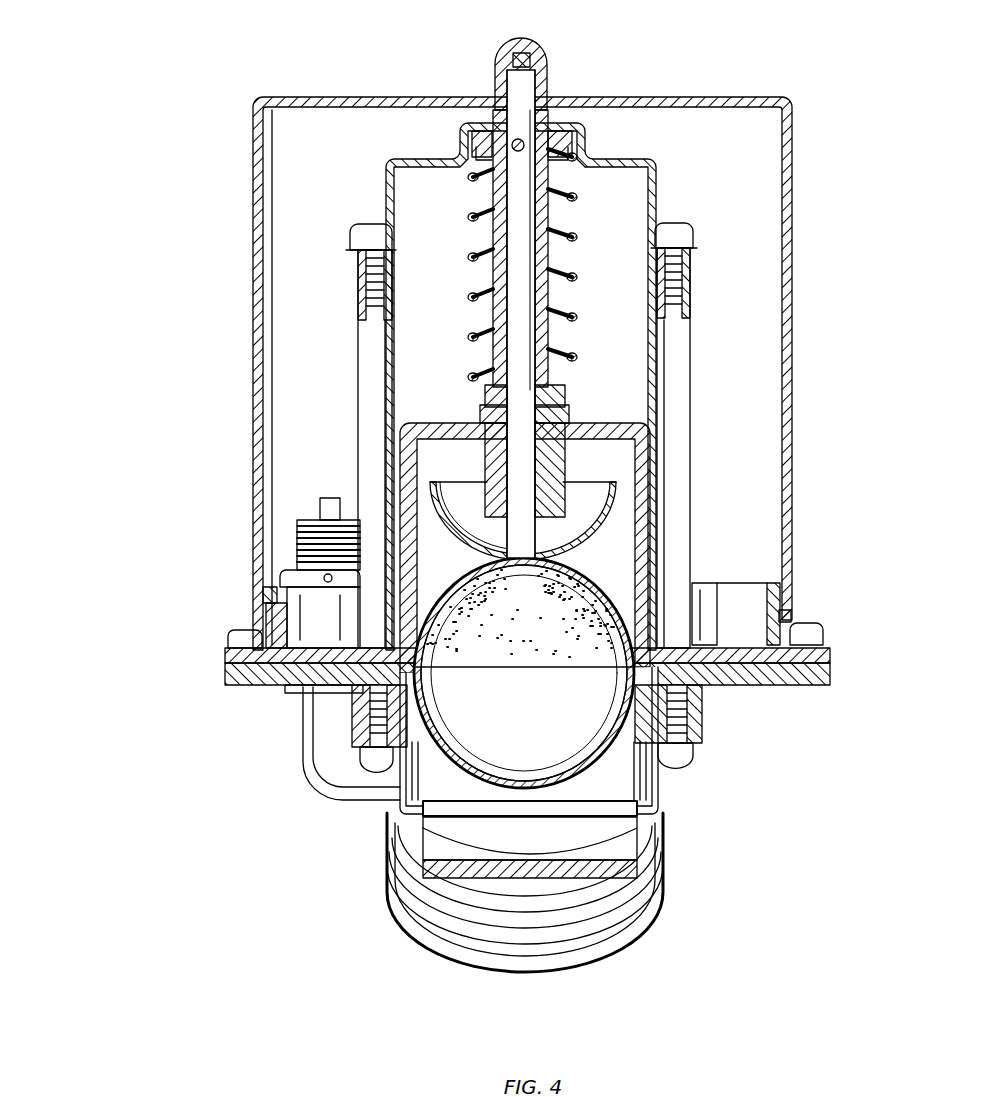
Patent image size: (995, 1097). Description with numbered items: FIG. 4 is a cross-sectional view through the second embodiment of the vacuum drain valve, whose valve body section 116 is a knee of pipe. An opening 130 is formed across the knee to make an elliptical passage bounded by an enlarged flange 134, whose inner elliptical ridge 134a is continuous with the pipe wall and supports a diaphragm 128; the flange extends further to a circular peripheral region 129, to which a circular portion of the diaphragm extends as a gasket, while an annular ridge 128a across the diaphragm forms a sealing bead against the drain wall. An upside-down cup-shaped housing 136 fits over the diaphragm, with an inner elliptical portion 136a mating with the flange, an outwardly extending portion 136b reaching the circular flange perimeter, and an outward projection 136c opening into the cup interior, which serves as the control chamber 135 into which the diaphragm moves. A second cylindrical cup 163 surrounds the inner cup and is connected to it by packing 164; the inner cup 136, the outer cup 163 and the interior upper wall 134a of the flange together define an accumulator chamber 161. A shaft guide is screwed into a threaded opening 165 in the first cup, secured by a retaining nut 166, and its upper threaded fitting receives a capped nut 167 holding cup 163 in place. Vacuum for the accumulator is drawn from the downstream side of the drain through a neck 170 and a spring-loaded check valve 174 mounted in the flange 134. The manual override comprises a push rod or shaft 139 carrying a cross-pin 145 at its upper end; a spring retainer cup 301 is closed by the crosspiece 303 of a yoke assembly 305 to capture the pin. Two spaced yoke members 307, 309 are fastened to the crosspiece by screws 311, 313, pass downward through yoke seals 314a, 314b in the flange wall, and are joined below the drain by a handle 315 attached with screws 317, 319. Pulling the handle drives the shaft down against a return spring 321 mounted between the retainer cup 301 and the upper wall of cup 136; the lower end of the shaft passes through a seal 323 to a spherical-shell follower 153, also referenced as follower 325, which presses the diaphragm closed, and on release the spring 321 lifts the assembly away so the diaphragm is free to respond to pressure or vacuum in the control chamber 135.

The cup-shaped lower valve member 116 is at (456, 762).
The diaphragm 128 is at (452, 602).
The annular ridge 128a is at (528, 575).
The circular peripheral region 129 is at (227, 672).
The opening 130 is at (600, 667).
The enlarged flange 134 is at (815, 681).
The inner elliptical ridge 134a is at (338, 690).
The control chamber 135 is at (458, 572).
The cup-shaped housing 136 is at (436, 424).
The inner elliptical portion 136a is at (770, 600).
The outwardly extending portion 136b is at (645, 552).
The outward projection 136c is at (268, 626).
The push rod or shaft 139 is at (512, 238).
The cross-pin 145 is at (562, 166).
The follower 153 is at (480, 525).
The accumulator chamber 161 is at (298, 367).
The second cylindrical cup 163 is at (255, 266).
The packing 164 is at (265, 600).
The threaded opening 165 is at (578, 445).
The retaining nut 166 is at (567, 388).
The capped nut 167 is at (537, 46).
The neck 170 is at (343, 755).
The spring loaded check valve 174 is at (292, 528).
The spring retainer cup 301 is at (480, 160).
The crosspiece 303 is at (585, 135).
The yoke assembly 305 is at (665, 203).
The yoke member 307 is at (690, 362).
The yoke member 309 is at (375, 396).
The screw 311 is at (692, 238).
The screw 313 is at (355, 238).
The yoke seal 314a is at (312, 682).
The yoke seal 314b is at (700, 688).
The handle 315 is at (586, 812).
The screw 317 is at (365, 760).
The screw 319 is at (700, 757).
The spring 321 is at (575, 276).
The seal 323 is at (563, 505).
The follower 325 is at (583, 528).